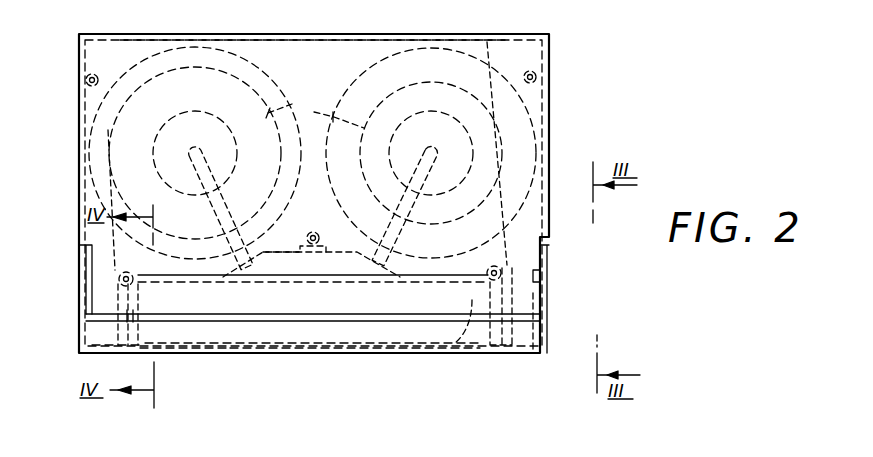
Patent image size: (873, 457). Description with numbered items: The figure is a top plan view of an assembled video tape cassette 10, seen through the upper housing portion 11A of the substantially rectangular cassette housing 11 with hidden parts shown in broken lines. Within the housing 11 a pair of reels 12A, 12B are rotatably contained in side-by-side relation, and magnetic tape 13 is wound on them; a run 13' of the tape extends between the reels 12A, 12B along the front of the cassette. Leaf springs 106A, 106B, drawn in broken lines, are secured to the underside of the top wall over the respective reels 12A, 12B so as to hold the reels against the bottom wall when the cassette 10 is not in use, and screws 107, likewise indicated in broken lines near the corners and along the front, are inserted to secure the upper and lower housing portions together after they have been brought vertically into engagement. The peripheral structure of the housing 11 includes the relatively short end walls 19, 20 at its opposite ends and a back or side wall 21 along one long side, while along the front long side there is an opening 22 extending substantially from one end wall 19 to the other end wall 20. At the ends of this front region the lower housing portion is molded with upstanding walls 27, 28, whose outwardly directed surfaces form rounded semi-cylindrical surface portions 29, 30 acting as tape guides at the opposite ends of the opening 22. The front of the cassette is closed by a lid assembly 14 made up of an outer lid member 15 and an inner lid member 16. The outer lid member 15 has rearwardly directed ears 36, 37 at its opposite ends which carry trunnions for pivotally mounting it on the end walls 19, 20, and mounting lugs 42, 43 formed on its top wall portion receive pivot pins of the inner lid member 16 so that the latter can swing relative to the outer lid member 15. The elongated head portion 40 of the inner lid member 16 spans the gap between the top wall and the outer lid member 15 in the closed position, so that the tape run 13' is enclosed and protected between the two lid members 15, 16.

The tape cassette 10 is at (588, 114).
The cassette housing 11 is at (333, 33).
The upper housing portion 11A is at (411, 46).
The reel 12A is at (173, 58).
The reel 12B is at (473, 72).
The magnetic tape 13 is at (307, 156).
The tape run 13' is at (311, 316).
The lid assembly 14 is at (274, 356).
The outer lid member 15 is at (438, 355).
The inner lid member 16 is at (390, 294).
The end wall 19 is at (553, 141).
The end wall 20 is at (84, 130).
The back wall 21 is at (259, 38).
The opening 22 is at (356, 324).
The upstanding wall 27 is at (494, 296).
The upstanding wall 28 is at (134, 303).
The semi-cylindrical surface portion 29 is at (518, 352).
The semi-cylindrical surface portion 30 is at (105, 345).
The ear 36 is at (552, 319).
The ear 37 is at (78, 315).
The head portion 40 is at (242, 305).
The mounting lug 42 is at (472, 352).
The mounting lug 43 is at (187, 355).
The leaf spring 106A is at (227, 182).
The leaf spring 106B is at (398, 208).
The screws 107 is at (85, 80).